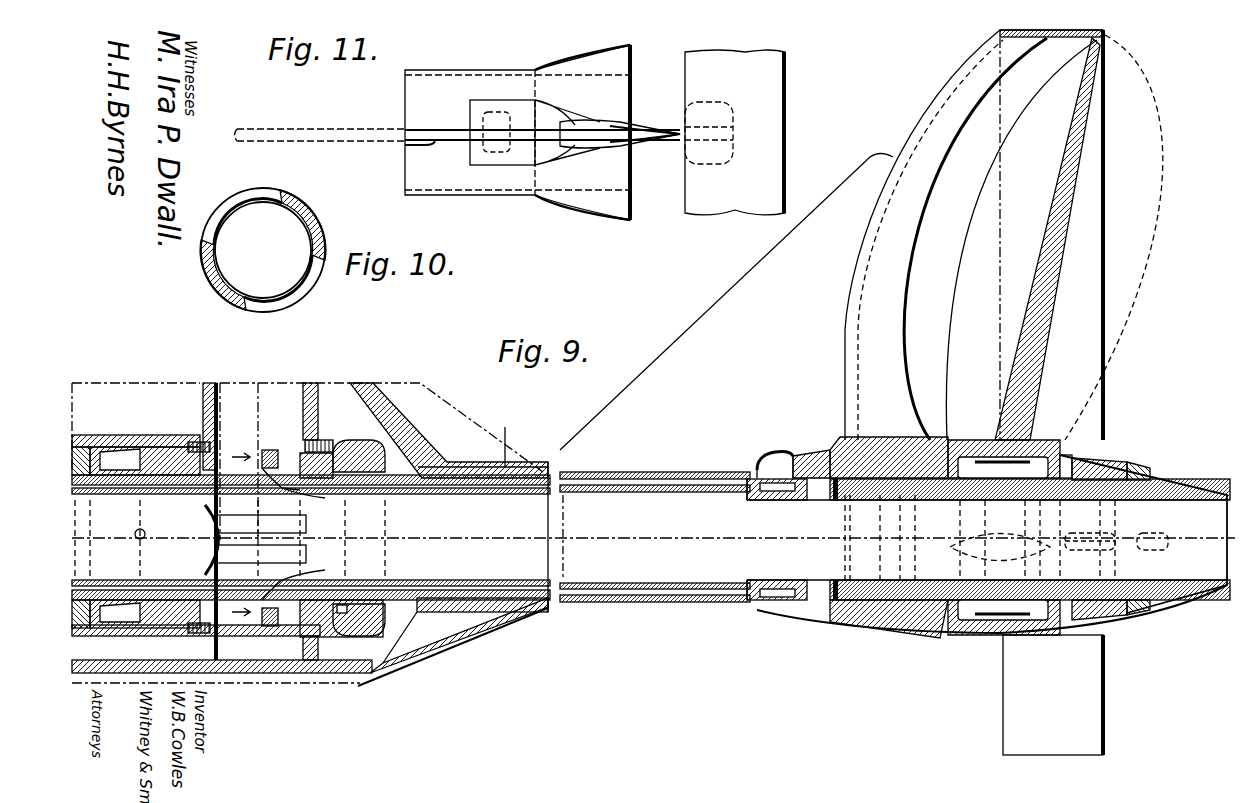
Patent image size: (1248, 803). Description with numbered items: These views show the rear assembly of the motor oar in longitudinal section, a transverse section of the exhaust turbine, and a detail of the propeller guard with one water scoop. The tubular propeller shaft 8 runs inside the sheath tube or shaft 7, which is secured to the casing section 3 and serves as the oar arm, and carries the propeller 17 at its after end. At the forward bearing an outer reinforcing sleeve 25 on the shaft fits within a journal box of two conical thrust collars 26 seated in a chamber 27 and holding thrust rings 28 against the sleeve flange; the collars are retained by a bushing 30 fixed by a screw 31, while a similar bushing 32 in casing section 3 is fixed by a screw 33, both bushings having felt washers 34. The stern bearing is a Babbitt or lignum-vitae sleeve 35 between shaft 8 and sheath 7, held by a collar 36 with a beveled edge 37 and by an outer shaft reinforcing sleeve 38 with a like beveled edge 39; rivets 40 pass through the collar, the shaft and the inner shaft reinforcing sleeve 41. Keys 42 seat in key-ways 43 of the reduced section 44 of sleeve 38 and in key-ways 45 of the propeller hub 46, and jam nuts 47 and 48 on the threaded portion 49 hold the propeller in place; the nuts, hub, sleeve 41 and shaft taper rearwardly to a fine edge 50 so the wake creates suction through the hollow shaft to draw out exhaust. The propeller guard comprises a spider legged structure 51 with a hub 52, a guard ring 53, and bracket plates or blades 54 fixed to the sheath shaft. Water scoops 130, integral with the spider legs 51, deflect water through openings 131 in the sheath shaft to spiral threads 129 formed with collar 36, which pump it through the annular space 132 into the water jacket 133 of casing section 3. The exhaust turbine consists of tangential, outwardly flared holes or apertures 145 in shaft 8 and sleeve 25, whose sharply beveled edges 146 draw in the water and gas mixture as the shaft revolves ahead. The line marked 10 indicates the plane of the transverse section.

In FIG. 9, the casing section 3 is at (405, 440).
In FIG. 11, the sheath tube or shaft 7 is at (445, 178).
In FIG. 9, the sheath tube or shaft 7 is at (503, 462).
In FIG. 10, the propeller shaft 8 is at (300, 215).
In FIG. 9, the propeller shaft 8 is at (485, 492).
In FIG. 9, the bolts 10 is at (251, 522).
In FIG. 9, the propeller 17 is at (1050, 255).
In FIG. 9, the outer reinforcing sleeve 25 is at (138, 540).
In FIG. 9, the thrust collars 26 is at (148, 460).
In FIG. 9, the chamber 27 is at (135, 445).
In FIG. 9, the thrust rings 28 is at (85, 447).
In FIG. 9, the bushing 30 is at (175, 488).
In FIG. 9, the screw 31 is at (222, 445).
In FIG. 9, the bushing 32 is at (322, 600).
In FIG. 9, the screw 33 is at (300, 450).
In FIG. 9, the felt washers 34 is at (245, 475).
In FIG. 9, the bearing sleeve 35 is at (878, 440).
In FIG. 9, the collar 36 is at (815, 492).
In FIG. 9, the beveled edge 37 is at (860, 600).
In FIG. 9, the outer shaft reinforcing sleeve 38 is at (925, 490).
In FIG. 9, the beveled edge 39 is at (910, 485).
In FIG. 9, the rivets 40 is at (870, 505).
In FIG. 9, the inner shaft reinforcing sleeve 41 is at (1180, 580).
In FIG. 9, the keys 42 is at (1065, 460).
In FIG. 9, the key-ways 43 is at (1015, 480).
In FIG. 9, the reduced section 44 is at (988, 580).
In FIG. 9, the key-ways 45 is at (962, 458).
In FIG. 9, the propeller hub 46 is at (1038, 450).
In FIG. 9, the jam nut 47 is at (1100, 462).
In FIG. 9, the jam nut 48 is at (1138, 468).
In FIG. 9, the threaded portion 49 is at (1170, 480).
In FIG. 9, the fine edge 50 is at (1215, 498).
In FIG. 11, the spider legged structure 51 is at (640, 125).
In FIG. 9, the spider legged structure 51 is at (895, 305).
In FIG. 11, the hub 52 is at (585, 200).
In FIG. 9, the hub 52 is at (955, 440).
In FIG. 11, the guard ring 53 is at (780, 78).
In FIG. 9, the guard ring 53 is at (1075, 712).
In FIG. 11, the bracket plates or blades 54 is at (450, 128).
In FIG. 9, the bracket plates or blades 54 is at (730, 310).
In FIG. 9, the spiral threads 129 is at (790, 600).
In FIG. 11, the water scoops 130 is at (480, 150).
In FIG. 9, the water scoops 130 is at (790, 452).
In FIG. 9, the openings 131 is at (808, 450).
In FIG. 9, the annular space 132 is at (605, 485).
In FIG. 9, the water jacket 133 is at (352, 400).
In FIG. 10, the holes or apertures 145 is at (268, 192).
In FIG. 9, the holes or apertures 145 is at (262, 520).
In FIG. 10, the edges 146 is at (282, 190).
In FIG. 9, the edges 146 is at (345, 458).